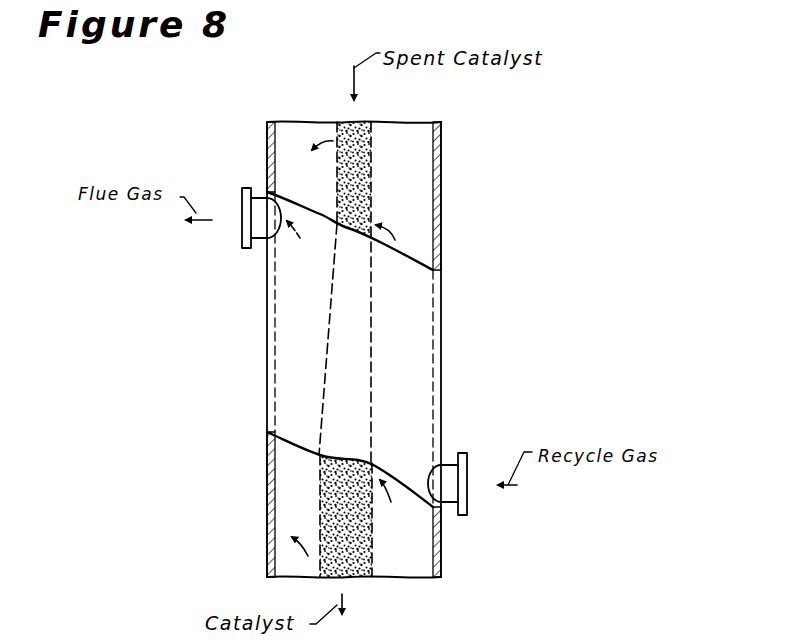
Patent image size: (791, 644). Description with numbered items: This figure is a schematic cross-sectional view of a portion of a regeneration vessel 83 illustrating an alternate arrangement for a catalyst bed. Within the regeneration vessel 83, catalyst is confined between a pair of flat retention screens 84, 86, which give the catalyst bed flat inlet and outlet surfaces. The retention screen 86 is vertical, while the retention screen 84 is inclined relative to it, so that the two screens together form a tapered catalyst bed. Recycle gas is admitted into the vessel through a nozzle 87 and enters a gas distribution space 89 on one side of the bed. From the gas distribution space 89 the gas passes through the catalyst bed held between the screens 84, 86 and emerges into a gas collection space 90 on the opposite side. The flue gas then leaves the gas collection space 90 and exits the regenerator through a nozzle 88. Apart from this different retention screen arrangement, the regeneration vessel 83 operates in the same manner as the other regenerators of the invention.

The regeneration vessel 83 is at (441, 228).
The flat retention screen 84 is at (372, 158).
The flat retention screen 86 is at (335, 178).
The nozzle 87 is at (463, 455).
The nozzle 88 is at (242, 248).
The gas distribution space 89 is at (418, 207).
The gas collection space 90 is at (304, 480).